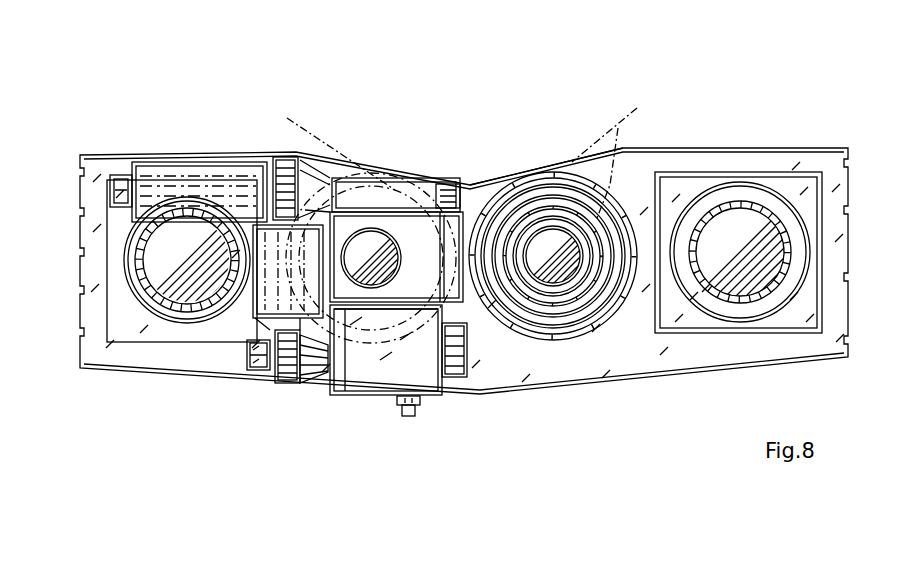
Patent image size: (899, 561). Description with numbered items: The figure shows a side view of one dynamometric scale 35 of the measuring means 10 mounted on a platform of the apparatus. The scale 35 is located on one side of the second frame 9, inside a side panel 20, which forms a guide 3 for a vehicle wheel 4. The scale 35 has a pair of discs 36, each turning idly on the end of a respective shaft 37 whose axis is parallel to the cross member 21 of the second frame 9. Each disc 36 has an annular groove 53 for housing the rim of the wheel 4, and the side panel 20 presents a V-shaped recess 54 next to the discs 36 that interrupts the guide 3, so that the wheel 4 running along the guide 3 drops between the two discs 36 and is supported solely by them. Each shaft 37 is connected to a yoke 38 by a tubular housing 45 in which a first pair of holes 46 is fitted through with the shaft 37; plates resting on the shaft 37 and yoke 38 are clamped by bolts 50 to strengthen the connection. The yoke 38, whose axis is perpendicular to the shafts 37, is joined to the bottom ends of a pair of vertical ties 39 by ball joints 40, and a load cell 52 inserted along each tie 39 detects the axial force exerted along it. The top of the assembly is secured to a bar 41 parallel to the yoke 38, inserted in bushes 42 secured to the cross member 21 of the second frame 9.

The guide 3 is at (682, 148).
The vehicle wheel 4 is at (618, 128).
The second frame 9 is at (852, 100).
The measuring means 10 is at (277, 140).
The side panel 20 is at (722, 160).
The cross member 21 is at (188, 285).
The dynamometric scale 35 is at (433, 150).
The disc 36 is at (516, 327).
The shaft 37 is at (370, 243).
The yoke 38 is at (452, 375).
The vertical tie 39 is at (265, 297).
The ball joint 40 is at (268, 380).
The bar 41 is at (450, 178).
The bush 42 is at (187, 181).
The tubular housing 45 is at (352, 380).
The first pair of holes 46 is at (373, 342).
The bolt 50 is at (403, 417).
The load cell 52 is at (250, 307).
The annular groove 53 is at (615, 135).
The V-shaped recess 54 is at (510, 165).